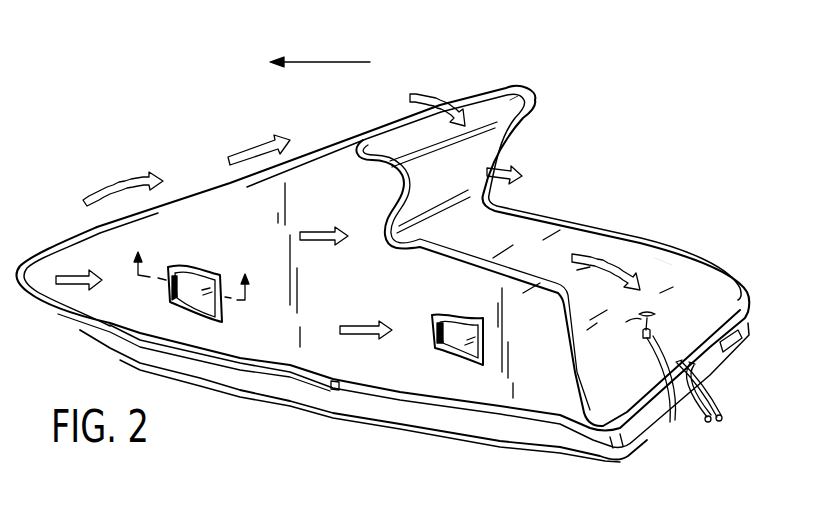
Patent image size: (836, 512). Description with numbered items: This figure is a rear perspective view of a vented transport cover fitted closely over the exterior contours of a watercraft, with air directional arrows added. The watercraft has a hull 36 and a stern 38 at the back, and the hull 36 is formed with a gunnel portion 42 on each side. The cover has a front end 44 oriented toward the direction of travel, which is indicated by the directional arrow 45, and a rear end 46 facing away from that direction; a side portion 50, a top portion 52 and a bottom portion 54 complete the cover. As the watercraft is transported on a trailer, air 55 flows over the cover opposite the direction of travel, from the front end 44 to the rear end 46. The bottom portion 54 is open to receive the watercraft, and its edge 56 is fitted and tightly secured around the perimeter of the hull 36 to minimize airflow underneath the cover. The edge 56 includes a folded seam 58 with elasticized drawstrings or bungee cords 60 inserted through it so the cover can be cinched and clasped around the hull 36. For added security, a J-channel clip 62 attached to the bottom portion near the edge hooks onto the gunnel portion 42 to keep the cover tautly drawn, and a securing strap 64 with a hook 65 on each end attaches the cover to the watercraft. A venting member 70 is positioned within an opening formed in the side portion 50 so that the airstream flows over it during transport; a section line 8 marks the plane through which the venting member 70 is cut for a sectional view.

The section line 8- 8 is at (191, 269).
The hull 36 is at (543, 440).
The stern 38 is at (650, 421).
The gunnel portion 42 is at (377, 400).
The front end 44 is at (202, 188).
The directional arrow 45 is at (328, 58).
The rear end 46 is at (704, 288).
The side portion 50 is at (337, 177).
The top portion 52 is at (508, 103).
The bottom portion 54 is at (417, 383).
The air 55 is at (108, 193).
The edge 56 is at (455, 410).
The folded seam 58 is at (745, 322).
The bungee cords 60 is at (713, 394).
The J-channel clip 62 is at (337, 393).
The securing strap 64 is at (658, 335).
The hook 65 is at (647, 310).
The venting member 70 is at (483, 362).